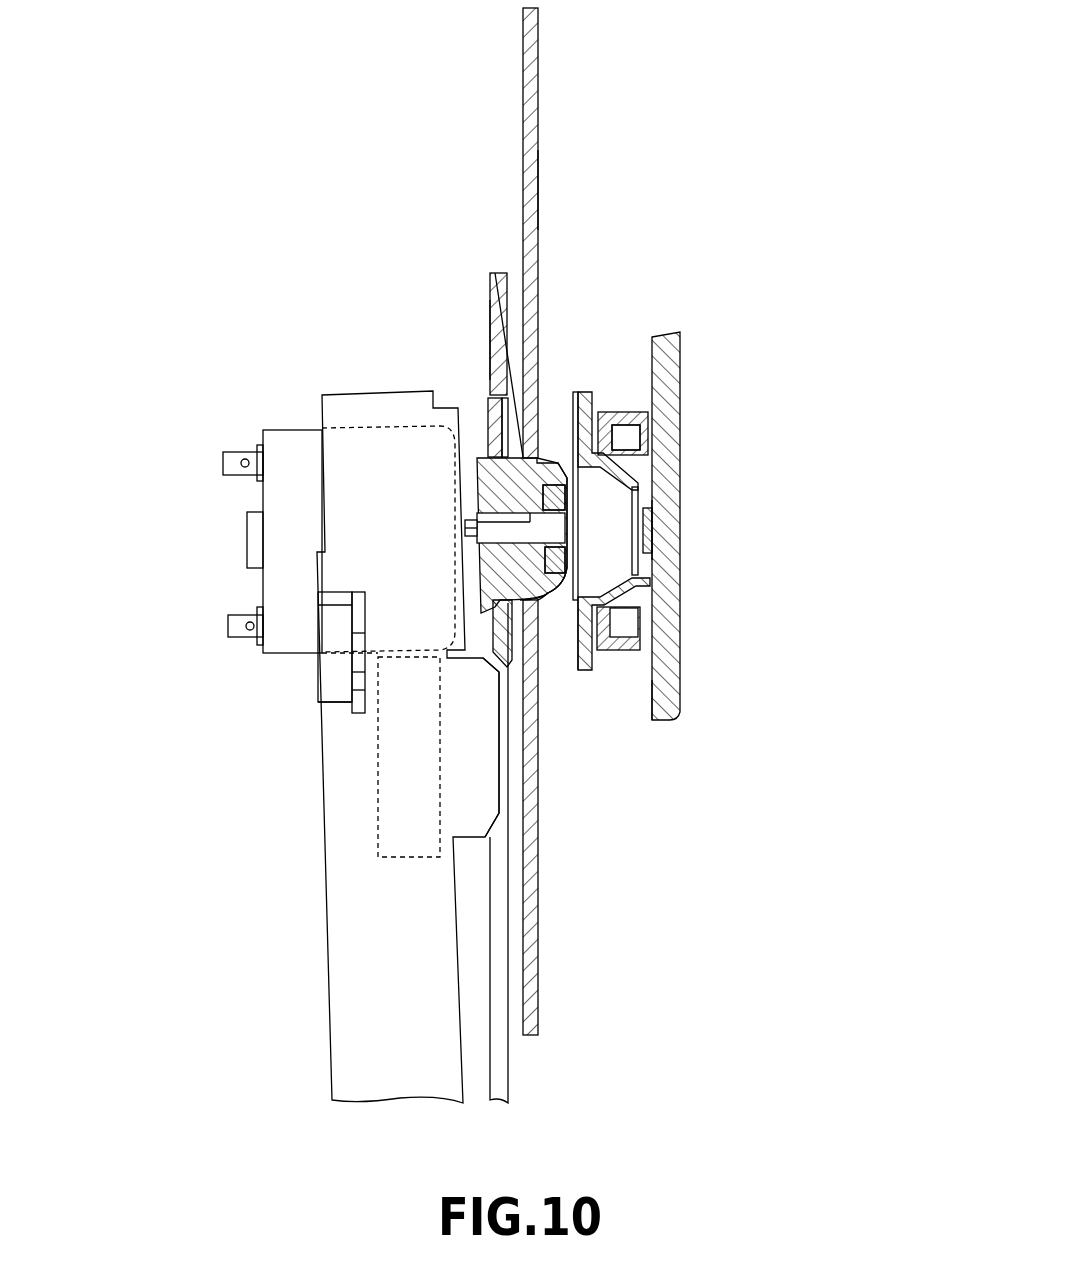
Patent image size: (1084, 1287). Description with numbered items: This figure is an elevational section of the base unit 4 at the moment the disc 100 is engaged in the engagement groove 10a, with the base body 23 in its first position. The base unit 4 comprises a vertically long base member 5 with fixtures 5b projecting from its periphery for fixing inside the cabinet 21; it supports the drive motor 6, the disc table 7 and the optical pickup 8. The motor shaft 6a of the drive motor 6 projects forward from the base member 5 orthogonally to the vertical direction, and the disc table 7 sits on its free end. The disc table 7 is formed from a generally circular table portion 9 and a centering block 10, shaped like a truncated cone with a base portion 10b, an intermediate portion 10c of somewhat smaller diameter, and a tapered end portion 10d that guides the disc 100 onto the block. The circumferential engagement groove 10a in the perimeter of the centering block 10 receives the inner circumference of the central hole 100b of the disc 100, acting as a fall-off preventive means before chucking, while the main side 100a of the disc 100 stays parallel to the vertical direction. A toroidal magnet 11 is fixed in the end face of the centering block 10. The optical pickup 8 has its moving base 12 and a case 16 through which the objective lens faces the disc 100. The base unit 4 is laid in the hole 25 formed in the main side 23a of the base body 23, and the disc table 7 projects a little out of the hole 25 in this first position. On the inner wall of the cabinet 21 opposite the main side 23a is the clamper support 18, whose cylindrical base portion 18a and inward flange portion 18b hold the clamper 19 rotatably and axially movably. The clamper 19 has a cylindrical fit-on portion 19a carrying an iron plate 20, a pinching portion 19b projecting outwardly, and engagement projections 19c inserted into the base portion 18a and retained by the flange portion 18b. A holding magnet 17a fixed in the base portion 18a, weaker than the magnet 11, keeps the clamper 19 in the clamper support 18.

The base unit 4 is at (343, 280).
The base member 5 is at (367, 984).
The fixture 5b is at (340, 712).
The drive motor 6 is at (292, 443).
The motor shaft 6a is at (465, 525).
The disc table 7 is at (477, 457).
The optical pickup 8 is at (472, 780).
The table portion 9 is at (478, 627).
The centering block 10 is at (547, 457).
The engagement groove 10a is at (505, 322).
The base portion 10b is at (508, 667).
The intermediate portion 10c is at (540, 600).
The end portion 10d is at (577, 400).
The toroidal magnet 11 is at (543, 490).
The moving base 12 is at (380, 828).
The case 16 is at (505, 747).
The magnet 17a is at (640, 530).
The clamper support 18 is at (617, 653).
The base portion 18a is at (677, 714).
The flange portion 18b is at (583, 668).
The clamper 19 is at (593, 408).
The fit-on portion 19a is at (640, 440).
The pinching portion 19b is at (595, 396).
The engagement projection 19c is at (645, 622).
The iron plate 20 is at (650, 483).
The cabinet 21 is at (668, 336).
The base body 23 is at (490, 300).
The main side 23a is at (490, 337).
The hole 25 is at (490, 377).
The disc 100 is at (538, 105).
The main side 100a is at (538, 186).
The central hole 100b is at (567, 560).